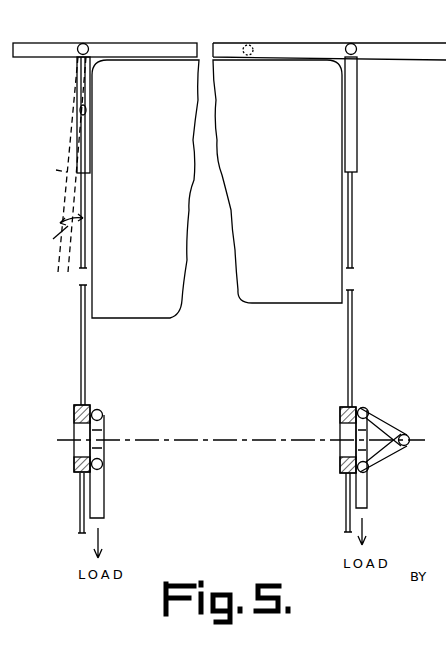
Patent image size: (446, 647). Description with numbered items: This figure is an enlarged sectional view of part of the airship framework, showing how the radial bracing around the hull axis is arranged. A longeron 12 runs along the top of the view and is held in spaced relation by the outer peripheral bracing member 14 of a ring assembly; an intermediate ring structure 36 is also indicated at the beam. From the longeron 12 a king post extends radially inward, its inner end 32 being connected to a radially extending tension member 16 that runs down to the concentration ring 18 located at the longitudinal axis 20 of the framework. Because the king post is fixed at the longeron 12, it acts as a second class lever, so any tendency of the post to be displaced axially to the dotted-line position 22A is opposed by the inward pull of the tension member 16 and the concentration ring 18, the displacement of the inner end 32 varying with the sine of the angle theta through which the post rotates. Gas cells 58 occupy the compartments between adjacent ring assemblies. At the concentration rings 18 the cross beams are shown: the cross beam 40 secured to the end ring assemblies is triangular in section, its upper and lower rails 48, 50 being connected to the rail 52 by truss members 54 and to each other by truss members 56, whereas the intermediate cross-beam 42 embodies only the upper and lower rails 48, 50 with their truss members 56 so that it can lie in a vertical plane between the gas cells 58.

The longeron 12 is at (134, 46).
The outer peripheral bracing member 14 is at (84, 44).
The tension member 16 is at (87, 243).
The concentration ring 18 is at (74, 463).
The longitudinal axis 20 is at (241, 427).
The displaced king post position 22A is at (62, 154).
The inner end of king post 32 is at (91, 173).
The intermediate ring structure 36 is at (254, 47).
The cross beam 40 is at (396, 419).
The cross-beam 42 is at (115, 427).
The upper rail 48 is at (104, 411).
The lower rail 50 is at (104, 470).
The rail 52 is at (408, 444).
The truss member 54 is at (385, 456).
The truss member 56 is at (98, 448).
The gas cell 58 is at (248, 192).